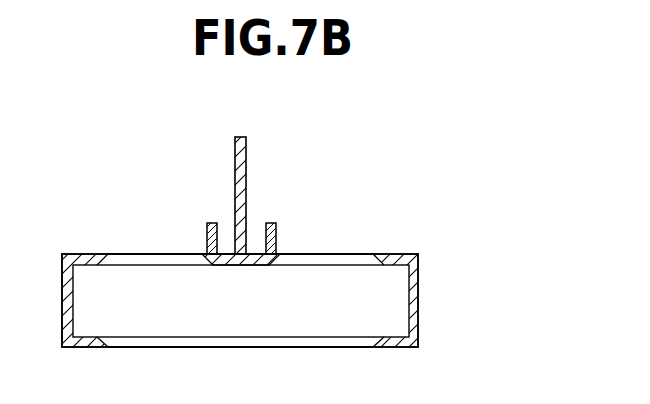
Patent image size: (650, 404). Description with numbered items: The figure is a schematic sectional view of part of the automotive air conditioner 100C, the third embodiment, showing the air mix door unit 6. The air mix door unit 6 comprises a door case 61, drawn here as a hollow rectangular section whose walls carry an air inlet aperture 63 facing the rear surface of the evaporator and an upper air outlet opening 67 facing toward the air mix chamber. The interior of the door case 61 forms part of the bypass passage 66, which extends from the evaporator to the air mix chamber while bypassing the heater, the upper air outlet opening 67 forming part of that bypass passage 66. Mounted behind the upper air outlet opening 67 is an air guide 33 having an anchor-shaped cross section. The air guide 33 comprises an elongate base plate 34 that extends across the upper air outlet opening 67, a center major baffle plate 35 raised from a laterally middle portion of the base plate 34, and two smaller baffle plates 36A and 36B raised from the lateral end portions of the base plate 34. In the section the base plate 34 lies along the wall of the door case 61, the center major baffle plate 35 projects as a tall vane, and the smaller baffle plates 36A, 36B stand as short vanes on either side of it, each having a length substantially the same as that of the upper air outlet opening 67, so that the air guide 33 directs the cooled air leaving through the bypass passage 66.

The air mix door unit 6 is at (414, 238).
The automotive air conditioner 100C is at (462, 140).
The air guide 33 is at (235, 156).
The base plate 34 is at (233, 265).
The center major baffle plate 35 is at (248, 167).
The smaller baffle plate 36A is at (277, 235).
The smaller baffle plate 36B is at (207, 238).
The door case 61 is at (418, 268).
The air inlet aperture 63 is at (364, 346).
The bypass passage 66 is at (390, 307).
The upper air outlet opening 67 is at (367, 254).